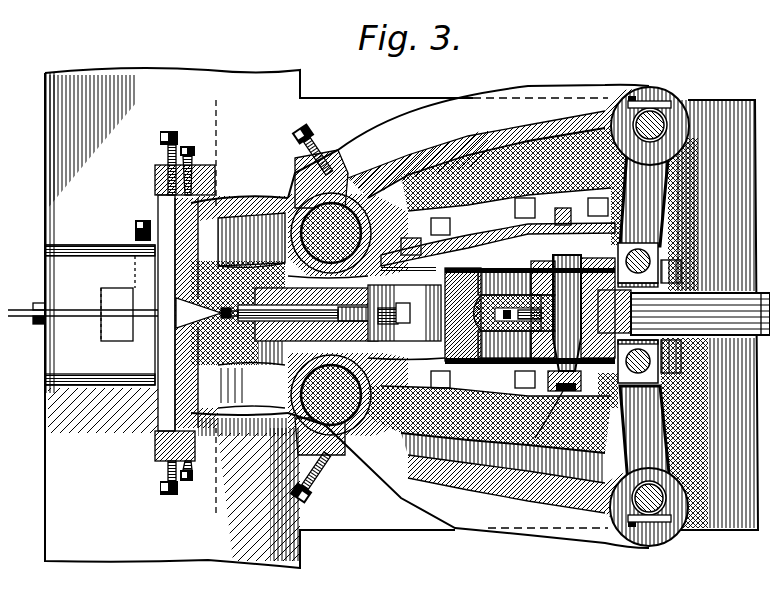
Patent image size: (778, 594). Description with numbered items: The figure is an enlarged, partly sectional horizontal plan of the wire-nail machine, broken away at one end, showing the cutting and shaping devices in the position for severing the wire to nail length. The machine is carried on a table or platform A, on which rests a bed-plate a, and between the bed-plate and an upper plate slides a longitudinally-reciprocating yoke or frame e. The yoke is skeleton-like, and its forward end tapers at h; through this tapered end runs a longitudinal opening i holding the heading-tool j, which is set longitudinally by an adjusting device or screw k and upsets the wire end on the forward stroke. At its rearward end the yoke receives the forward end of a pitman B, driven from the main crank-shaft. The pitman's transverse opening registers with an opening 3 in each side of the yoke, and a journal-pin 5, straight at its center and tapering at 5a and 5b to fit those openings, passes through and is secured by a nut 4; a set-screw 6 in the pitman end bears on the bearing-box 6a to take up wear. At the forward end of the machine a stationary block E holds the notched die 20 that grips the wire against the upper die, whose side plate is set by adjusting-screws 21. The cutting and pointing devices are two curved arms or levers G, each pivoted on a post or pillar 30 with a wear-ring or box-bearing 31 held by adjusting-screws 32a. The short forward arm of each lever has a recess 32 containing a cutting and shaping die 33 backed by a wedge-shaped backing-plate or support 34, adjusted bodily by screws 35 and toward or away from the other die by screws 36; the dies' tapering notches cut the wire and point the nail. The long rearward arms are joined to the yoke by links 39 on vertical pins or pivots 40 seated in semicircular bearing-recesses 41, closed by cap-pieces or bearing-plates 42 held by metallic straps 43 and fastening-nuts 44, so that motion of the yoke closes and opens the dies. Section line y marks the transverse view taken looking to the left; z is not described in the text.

The table or platform A is at (387, 97).
The pitman B is at (700, 314).
The stationary block E is at (100, 315).
The curved arms or levers G is at (468, 316).
The section line y y is at (210, 316).
The shaft section z is at (659, 315).
The bed-plate a is at (486, 293).
The longitudinally-reciprocating yoke or frame e is at (440, 340).
The tapering forward end h is at (240, 345).
The longitudinal opening i is at (373, 343).
The heading-tool j is at (335, 268).
The adjusting device or screw k is at (397, 297).
The opening in yoke side 3 is at (530, 263).
The nut 4 is at (543, 423).
The journal-pin 5 is at (555, 250).
The conical or tapering portion of journal-pin 5a is at (590, 248).
The conical or tapering portion of journal-pin 5b is at (510, 358).
The set-screw 6 is at (490, 300).
The bearing-box 6a is at (503, 332).
The die 20 is at (137, 313).
The adjusting-screws 21 is at (127, 217).
The post or pillar 30 is at (367, 187).
The wear-rings or box-bearings 31 is at (343, 187).
The recess 32 is at (153, 185).
The adjusting-screws 32a is at (304, 128).
The cutting and shaping die 33 is at (155, 200).
The backing-plate or support 34 is at (200, 200).
The screws 35 is at (183, 145).
The screws 36 is at (152, 128).
The link 39 is at (658, 185).
The vertical pins or pivots 40 is at (665, 108).
The semicircular bearing-recesses 41 is at (660, 135).
The cap-pieces or bearing-plates 42 is at (636, 90).
The metallic straps 43 is at (663, 165).
The fastening-nuts 44 is at (655, 95).